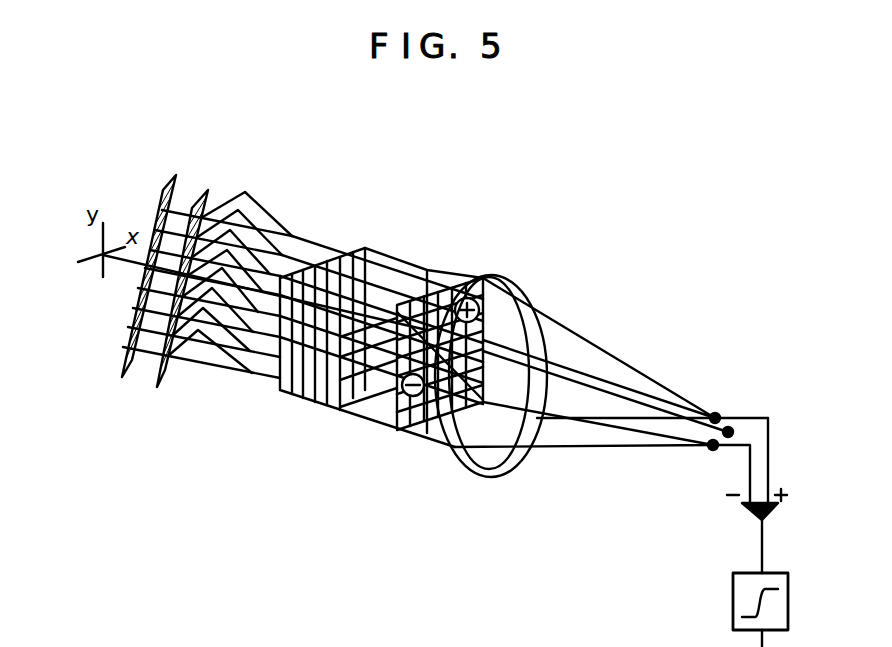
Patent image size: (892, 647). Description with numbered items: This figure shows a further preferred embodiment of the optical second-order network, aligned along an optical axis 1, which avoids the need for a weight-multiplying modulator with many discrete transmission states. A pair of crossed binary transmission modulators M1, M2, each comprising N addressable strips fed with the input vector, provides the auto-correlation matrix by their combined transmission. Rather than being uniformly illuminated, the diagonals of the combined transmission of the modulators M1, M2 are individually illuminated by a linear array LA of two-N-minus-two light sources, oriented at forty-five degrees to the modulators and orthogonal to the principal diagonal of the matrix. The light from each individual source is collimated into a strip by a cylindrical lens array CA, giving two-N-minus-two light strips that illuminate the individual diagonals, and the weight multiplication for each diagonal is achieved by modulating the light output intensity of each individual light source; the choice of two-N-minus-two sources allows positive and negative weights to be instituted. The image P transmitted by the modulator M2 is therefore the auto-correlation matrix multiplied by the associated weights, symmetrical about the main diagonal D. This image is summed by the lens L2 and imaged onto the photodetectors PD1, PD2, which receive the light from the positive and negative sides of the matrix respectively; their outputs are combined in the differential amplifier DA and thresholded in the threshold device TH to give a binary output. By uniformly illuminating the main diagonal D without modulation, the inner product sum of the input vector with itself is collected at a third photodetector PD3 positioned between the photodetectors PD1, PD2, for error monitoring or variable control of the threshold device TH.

The optical axis 1 is at (120, 263).
The linear array of light sources LA is at (160, 208).
The cylindrical lens array CA is at (195, 208).
The binary transmission modulator M1 is at (343, 247).
The binary transmission modulator M2 is at (398, 268).
The image P is at (393, 413).
The lens L2 is at (497, 277).
The main diagonal D is at (463, 462).
The photodetector PD1 is at (716, 413).
The photodetector PD2 is at (712, 447).
The third photodetector PD3 is at (733, 432).
The differential amplifier DA is at (768, 513).
The threshold device TH is at (733, 605).